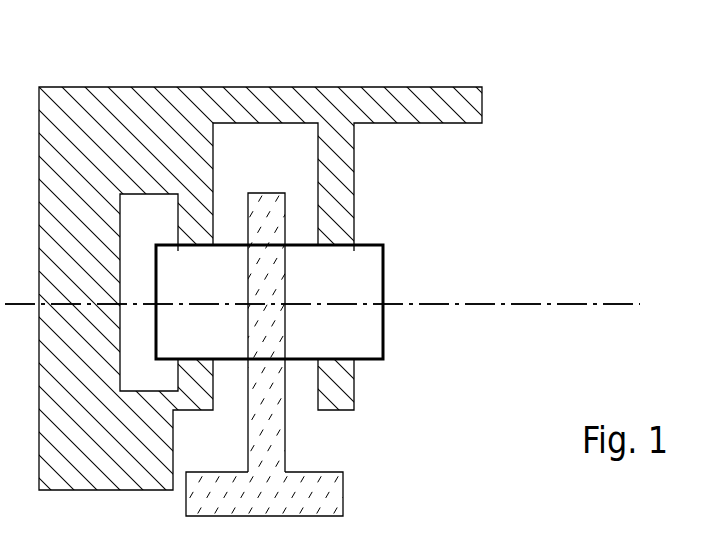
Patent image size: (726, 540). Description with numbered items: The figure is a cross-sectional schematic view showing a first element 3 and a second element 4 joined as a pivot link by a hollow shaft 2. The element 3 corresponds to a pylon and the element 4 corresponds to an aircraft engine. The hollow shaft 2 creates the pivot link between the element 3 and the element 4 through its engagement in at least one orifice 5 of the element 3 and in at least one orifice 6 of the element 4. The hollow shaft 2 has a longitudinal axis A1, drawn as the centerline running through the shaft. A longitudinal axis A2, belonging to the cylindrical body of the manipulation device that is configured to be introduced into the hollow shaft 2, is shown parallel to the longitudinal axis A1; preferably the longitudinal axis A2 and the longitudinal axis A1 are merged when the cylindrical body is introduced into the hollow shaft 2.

The hollow shaft 2 is at (355, 244).
The element 3 is at (272, 87).
The element 4 is at (345, 491).
The orifice 5 is at (178, 245).
The orifice 6 is at (284, 362).
The longitudinal axis A1 is at (584, 304).
The longitudinal axis A2 is at (537, 305).